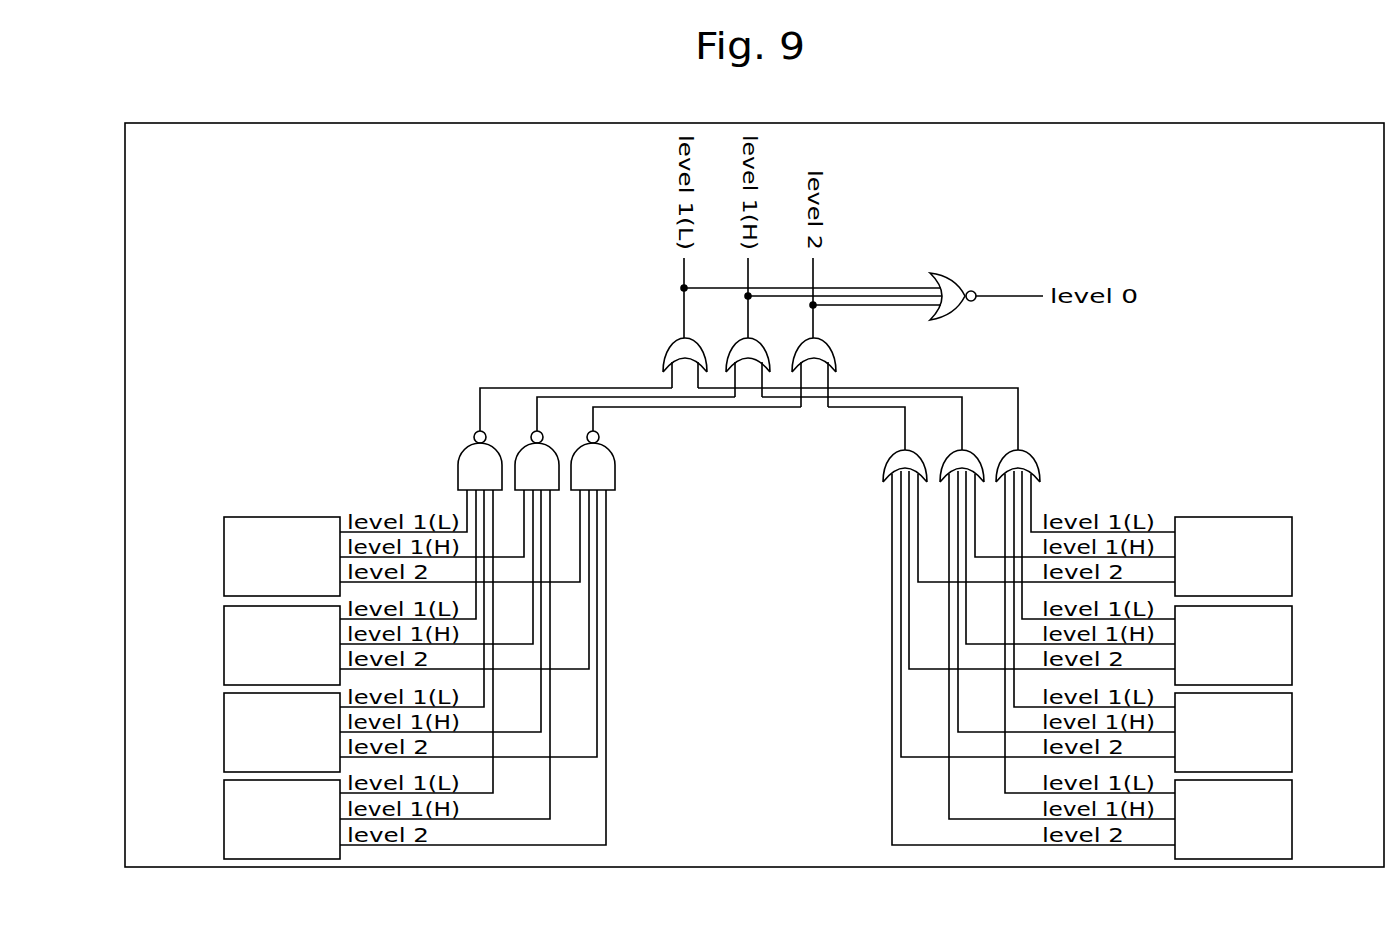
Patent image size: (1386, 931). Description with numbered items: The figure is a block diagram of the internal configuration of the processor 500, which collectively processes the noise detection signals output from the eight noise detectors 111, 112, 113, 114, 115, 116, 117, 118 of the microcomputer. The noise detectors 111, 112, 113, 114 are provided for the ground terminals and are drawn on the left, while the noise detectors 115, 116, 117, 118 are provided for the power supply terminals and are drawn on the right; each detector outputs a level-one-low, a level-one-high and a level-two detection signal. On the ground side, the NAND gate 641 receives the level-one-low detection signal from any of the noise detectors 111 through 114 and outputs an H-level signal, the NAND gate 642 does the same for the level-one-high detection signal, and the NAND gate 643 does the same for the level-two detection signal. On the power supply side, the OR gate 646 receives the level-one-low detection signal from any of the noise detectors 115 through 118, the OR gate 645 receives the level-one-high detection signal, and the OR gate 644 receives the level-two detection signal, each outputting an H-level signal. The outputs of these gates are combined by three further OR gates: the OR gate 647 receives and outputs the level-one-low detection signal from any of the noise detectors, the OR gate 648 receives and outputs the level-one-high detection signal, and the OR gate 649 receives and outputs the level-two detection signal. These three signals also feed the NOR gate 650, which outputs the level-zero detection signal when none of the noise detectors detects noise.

The processor 500 is at (988, 123).
The noise detector 111 is at (224, 551).
The noise detector 112 is at (224, 640).
The noise detector 113 is at (224, 727).
The noise detector 114 is at (224, 814).
The noise detector 115 is at (1292, 549).
The noise detector 116 is at (1292, 638).
The noise detector 117 is at (1292, 725).
The noise detector 118 is at (1292, 812).
The NAND gate 641 is at (461, 470).
The NAND gate 642 is at (570, 428).
The NAND gate 643 is at (612, 470).
The OR gate 644 is at (886, 470).
The OR gate 645 is at (947, 457).
The OR gate 646 is at (1030, 463).
The OR gate 647 is at (667, 352).
The OR gate 648 is at (738, 352).
The OR gate 649 is at (825, 353).
The NOR gate 650 is at (948, 319).